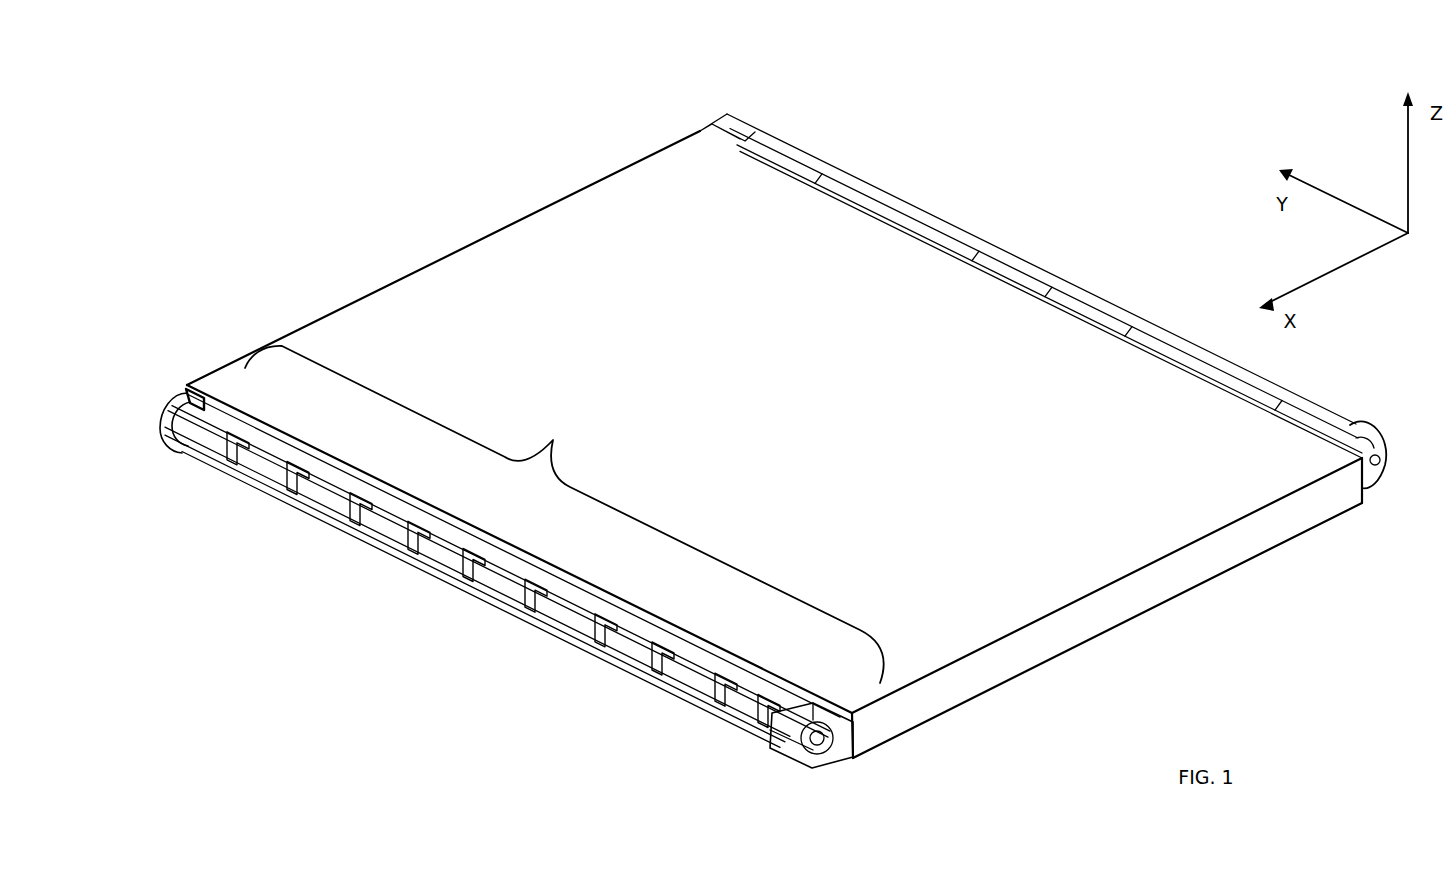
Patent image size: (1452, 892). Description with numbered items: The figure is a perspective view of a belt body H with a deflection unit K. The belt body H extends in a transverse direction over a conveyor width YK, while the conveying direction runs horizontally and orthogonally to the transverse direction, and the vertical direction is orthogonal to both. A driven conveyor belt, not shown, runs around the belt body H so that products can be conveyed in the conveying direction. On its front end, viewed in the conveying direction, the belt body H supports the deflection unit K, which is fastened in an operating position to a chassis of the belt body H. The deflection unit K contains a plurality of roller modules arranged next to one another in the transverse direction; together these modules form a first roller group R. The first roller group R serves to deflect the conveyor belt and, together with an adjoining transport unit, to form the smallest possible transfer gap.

The belt body H is at (503, 277).
The deflection unit K is at (150, 395).
The first roller group R is at (212, 447).
The conveyor width YK is at (564, 514).